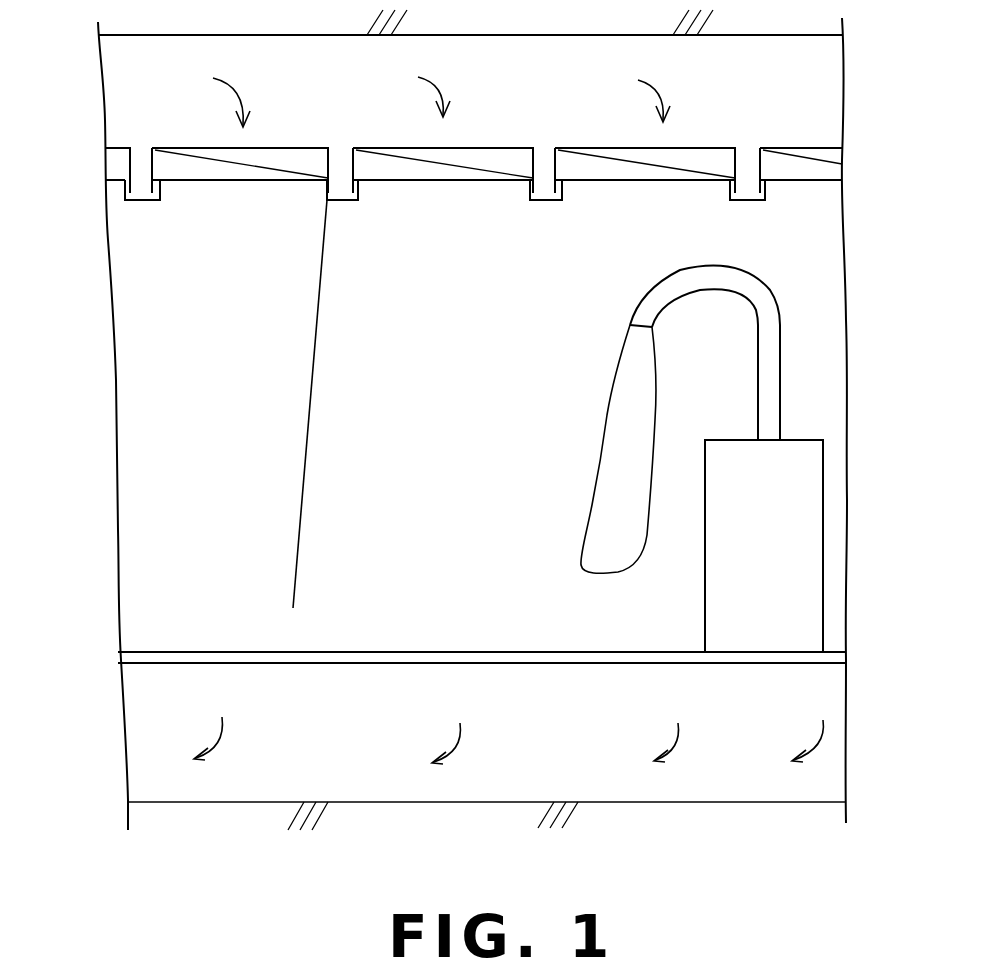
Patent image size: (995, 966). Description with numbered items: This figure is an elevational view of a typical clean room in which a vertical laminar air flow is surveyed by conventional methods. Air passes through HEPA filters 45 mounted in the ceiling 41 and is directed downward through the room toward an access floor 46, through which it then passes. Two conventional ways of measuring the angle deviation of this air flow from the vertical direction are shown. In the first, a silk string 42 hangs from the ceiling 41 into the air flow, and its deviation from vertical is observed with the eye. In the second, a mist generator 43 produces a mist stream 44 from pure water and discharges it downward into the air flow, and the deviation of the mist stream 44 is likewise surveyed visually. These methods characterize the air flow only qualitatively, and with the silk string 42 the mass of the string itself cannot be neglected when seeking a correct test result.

The ceiling 41 is at (469, 174).
The silk string 42 is at (300, 492).
The mist generator 43 is at (778, 482).
The mist stream 44 is at (637, 382).
The HEPA filters 45 is at (825, 157).
The access floor 46 is at (825, 657).